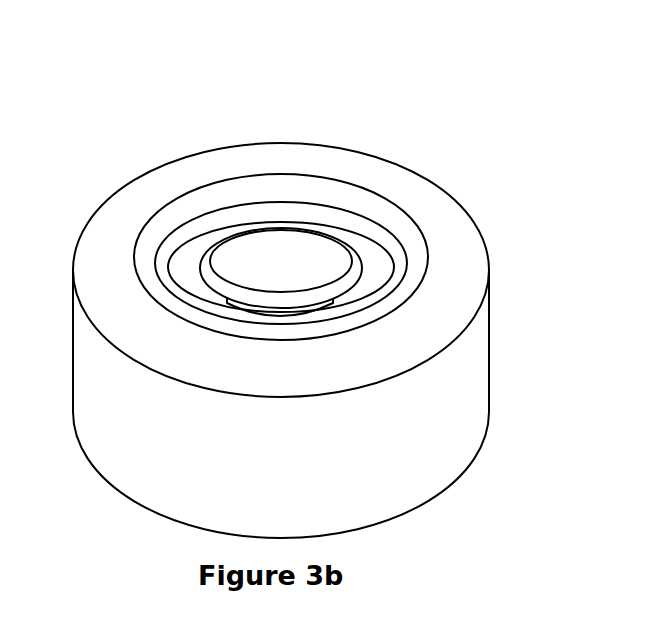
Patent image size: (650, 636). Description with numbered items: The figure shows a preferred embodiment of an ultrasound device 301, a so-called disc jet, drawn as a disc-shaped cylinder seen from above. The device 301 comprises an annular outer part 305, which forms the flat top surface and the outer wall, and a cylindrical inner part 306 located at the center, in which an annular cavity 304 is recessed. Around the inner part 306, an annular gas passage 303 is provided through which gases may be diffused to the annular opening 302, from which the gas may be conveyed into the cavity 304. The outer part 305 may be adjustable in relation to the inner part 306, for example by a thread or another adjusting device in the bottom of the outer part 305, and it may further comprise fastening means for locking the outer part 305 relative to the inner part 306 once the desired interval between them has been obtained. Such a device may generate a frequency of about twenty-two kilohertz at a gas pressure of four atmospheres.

The ultrasound device 301 is at (490, 350).
The annular opening 302 is at (177, 236).
The annular gas passage 303 is at (153, 222).
The annular cavity 304 is at (364, 262).
The annular outer part 305 is at (290, 157).
The cylindrical inner part 306 is at (273, 243).